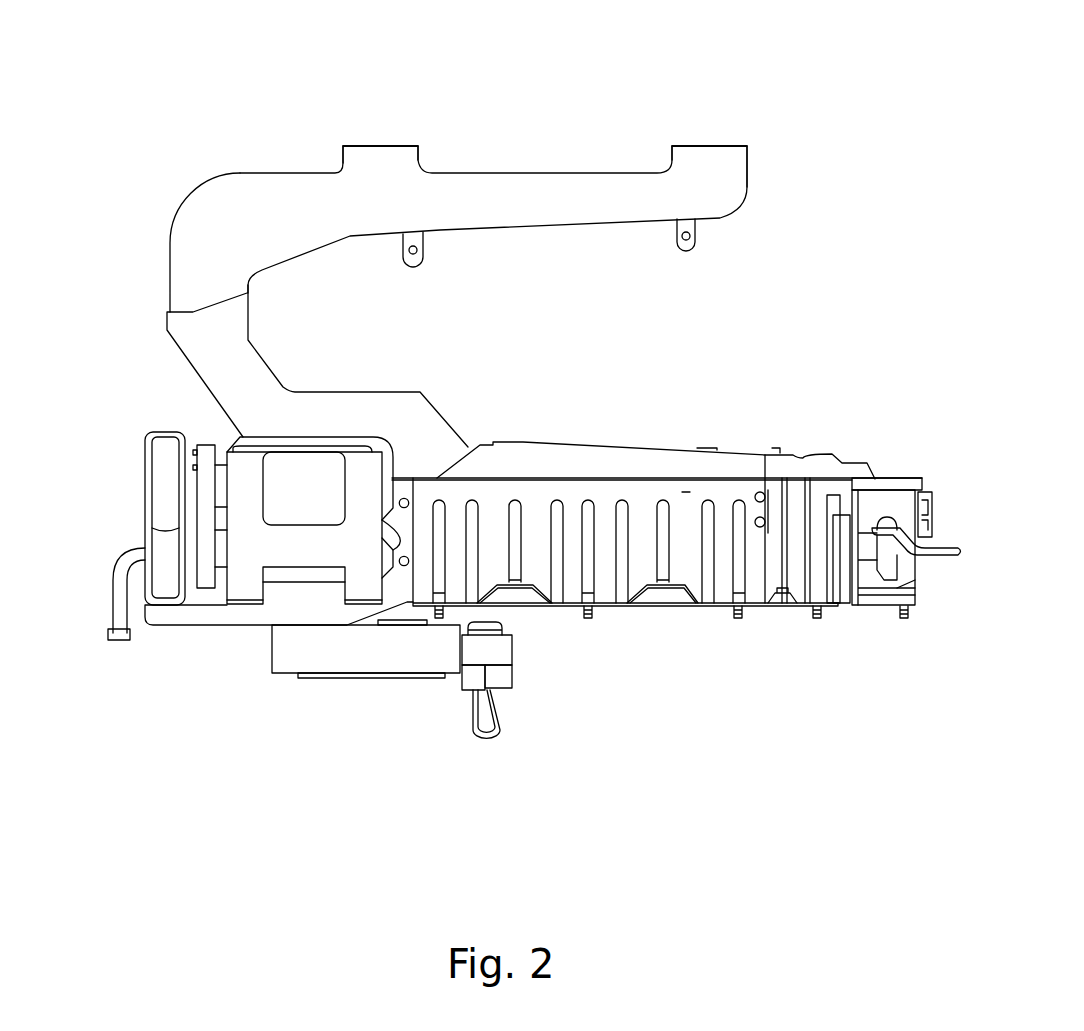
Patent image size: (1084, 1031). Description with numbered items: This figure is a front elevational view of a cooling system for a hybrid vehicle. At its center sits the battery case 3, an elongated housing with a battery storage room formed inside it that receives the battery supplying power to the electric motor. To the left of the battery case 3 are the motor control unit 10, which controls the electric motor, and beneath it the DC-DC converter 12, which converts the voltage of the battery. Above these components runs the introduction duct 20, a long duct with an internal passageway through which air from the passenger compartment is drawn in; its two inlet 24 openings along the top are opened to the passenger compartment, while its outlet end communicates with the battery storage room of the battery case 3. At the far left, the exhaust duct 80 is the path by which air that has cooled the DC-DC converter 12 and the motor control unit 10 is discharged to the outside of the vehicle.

The battery case 3 is at (684, 492).
The motor control unit 10 is at (266, 447).
The DC-DC converter 12 is at (387, 668).
The introduction duct 20 is at (207, 185).
The inlet 24 is at (383, 143).
The exhaust duct 80 is at (148, 508).